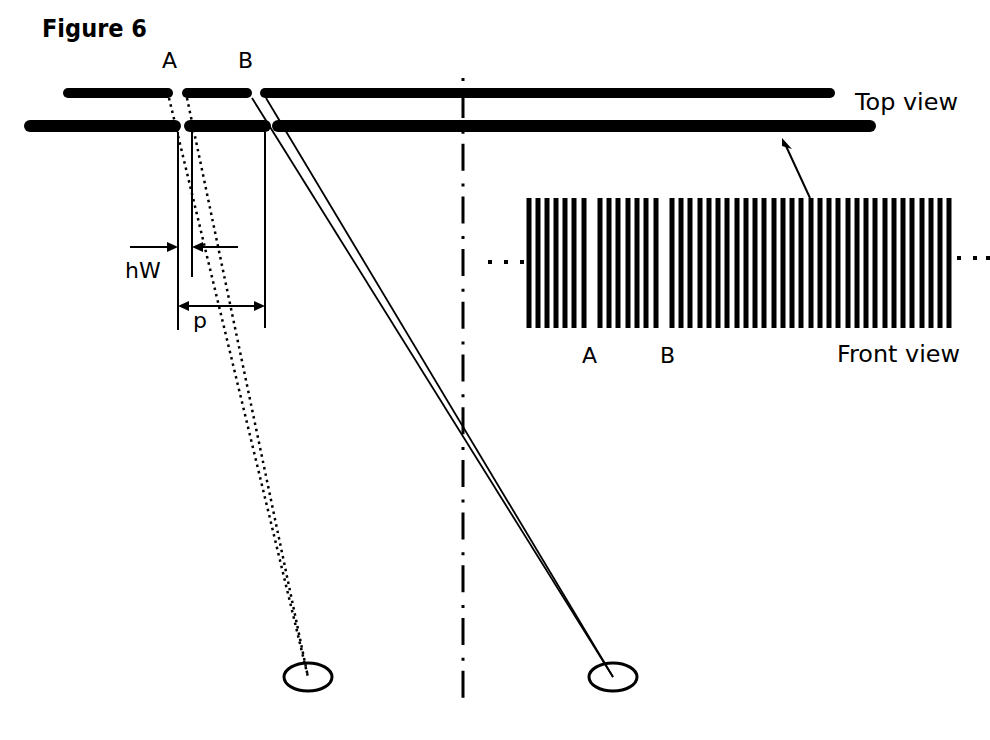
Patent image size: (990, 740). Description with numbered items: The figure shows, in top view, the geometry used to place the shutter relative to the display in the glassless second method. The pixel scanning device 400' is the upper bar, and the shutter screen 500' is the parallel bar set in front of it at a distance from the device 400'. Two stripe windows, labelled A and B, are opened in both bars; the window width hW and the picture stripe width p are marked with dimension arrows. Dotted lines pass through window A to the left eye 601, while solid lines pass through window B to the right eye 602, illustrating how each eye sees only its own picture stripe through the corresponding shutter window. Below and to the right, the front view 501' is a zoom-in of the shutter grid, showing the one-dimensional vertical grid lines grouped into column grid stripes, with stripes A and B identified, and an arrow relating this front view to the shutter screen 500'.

The pixel scanning device 400' is at (449, 72).
The shutter screen 500' is at (450, 147).
The grid stripe zoom-in view 501' is at (739, 252).
The left eye 601 is at (250, 394).
The right eye 602 is at (475, 394).